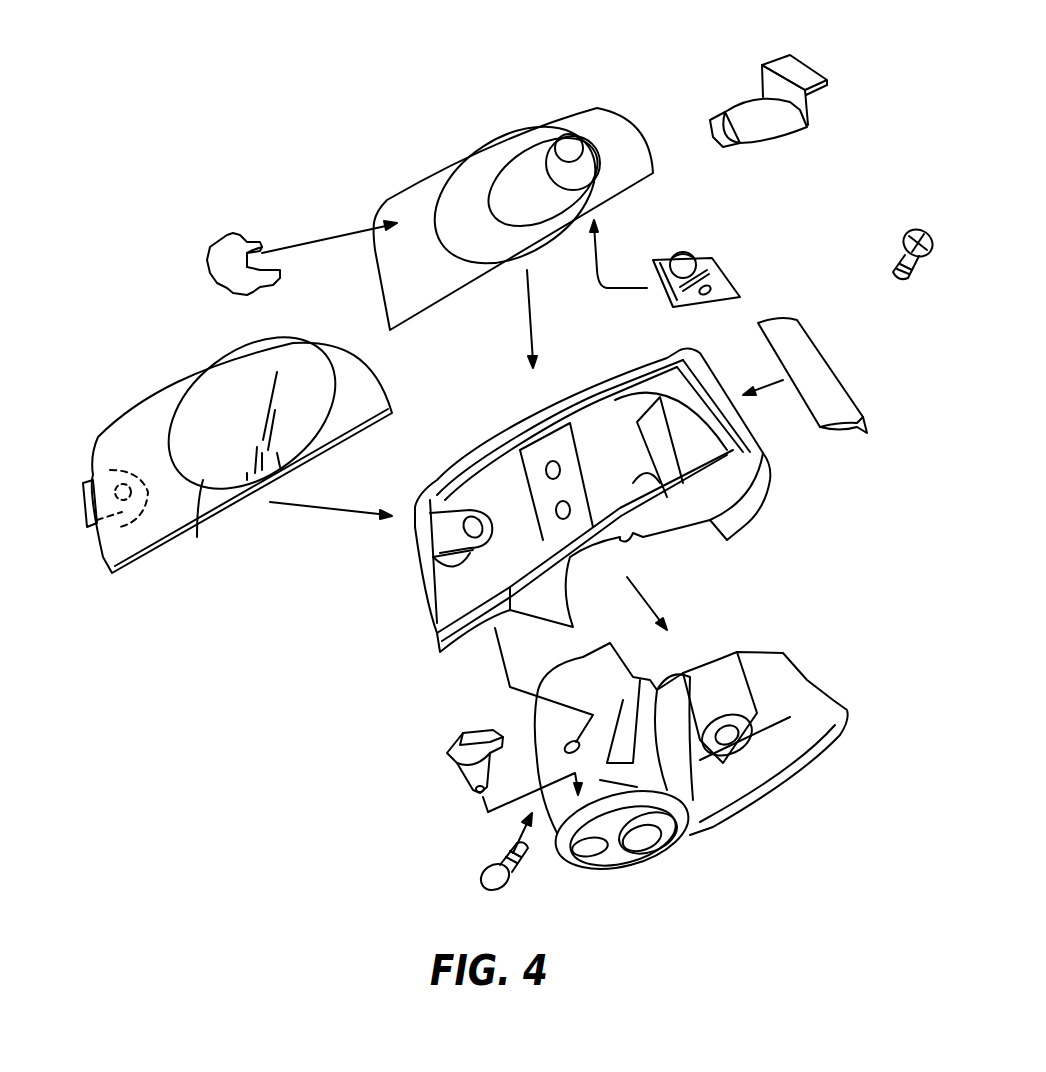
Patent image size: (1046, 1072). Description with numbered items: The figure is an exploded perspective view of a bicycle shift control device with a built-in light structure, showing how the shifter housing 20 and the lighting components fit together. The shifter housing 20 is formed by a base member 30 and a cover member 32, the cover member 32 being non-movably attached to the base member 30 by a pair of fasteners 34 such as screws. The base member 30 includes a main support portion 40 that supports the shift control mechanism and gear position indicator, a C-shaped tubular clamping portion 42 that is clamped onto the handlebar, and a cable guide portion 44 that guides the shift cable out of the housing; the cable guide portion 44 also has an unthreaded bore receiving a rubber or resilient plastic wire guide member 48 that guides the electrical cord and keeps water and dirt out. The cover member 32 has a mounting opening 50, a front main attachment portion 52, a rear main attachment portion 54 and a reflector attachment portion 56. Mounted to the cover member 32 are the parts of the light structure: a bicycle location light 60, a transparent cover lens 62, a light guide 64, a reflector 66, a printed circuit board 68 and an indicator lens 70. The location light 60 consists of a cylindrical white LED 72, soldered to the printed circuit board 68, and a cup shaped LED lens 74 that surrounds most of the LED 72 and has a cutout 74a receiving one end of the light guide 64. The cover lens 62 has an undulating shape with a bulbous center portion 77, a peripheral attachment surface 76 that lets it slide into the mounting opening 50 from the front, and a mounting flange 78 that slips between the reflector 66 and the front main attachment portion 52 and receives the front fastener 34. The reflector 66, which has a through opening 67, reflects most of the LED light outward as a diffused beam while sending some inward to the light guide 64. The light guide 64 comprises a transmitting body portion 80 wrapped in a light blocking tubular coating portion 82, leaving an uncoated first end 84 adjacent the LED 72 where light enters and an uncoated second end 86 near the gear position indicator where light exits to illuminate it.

The shifter housing 20 is at (864, 596).
The base member 30 is at (684, 766).
The cover member 32 is at (620, 500).
The fasteners 34 is at (897, 258).
The main support portion 40 is at (760, 690).
The tubular clamping portion 42 is at (797, 775).
The cable guide portion 44 is at (558, 848).
The wire guide member 48 is at (470, 790).
The mounting opening 50 is at (668, 485).
The front main attachment portion 52 is at (480, 565).
The rear main attachment portion 54 is at (770, 490).
The reflector attachment portion 56 is at (570, 490).
The bicycle location light 60 is at (734, 243).
The transparent cover lens 62 is at (233, 467).
The light guide 64 is at (761, 106).
The reflector 66 is at (513, 196).
The through opening 67 is at (577, 155).
The printed circuit board 68 is at (740, 272).
The indicator lens 70 is at (830, 343).
The LED 72 is at (695, 257).
The LED lens 74 is at (250, 237).
The cutout 74a is at (265, 248).
The peripheral attachment surface 76 is at (337, 423).
The bulbous center portion 77 is at (197, 523).
The mounting flange 78 is at (98, 552).
The transmitting body portion 80 is at (730, 108).
The tubular coating portion 82 is at (737, 105).
The first end 84 is at (708, 122).
The second end 86 is at (807, 62).